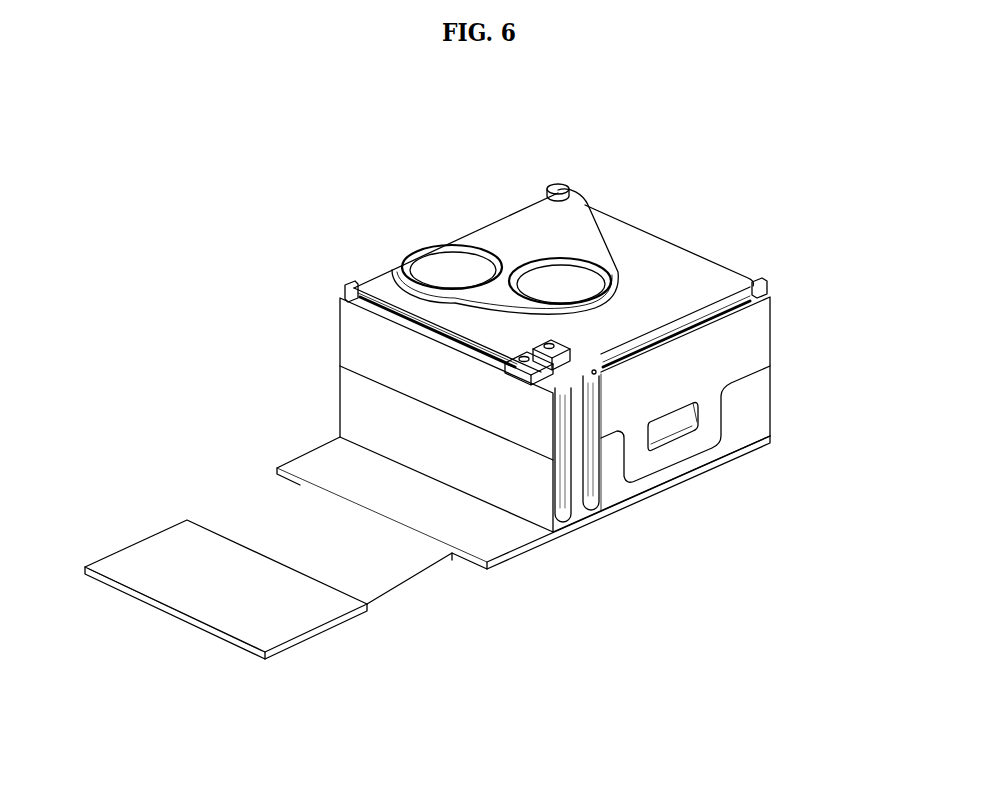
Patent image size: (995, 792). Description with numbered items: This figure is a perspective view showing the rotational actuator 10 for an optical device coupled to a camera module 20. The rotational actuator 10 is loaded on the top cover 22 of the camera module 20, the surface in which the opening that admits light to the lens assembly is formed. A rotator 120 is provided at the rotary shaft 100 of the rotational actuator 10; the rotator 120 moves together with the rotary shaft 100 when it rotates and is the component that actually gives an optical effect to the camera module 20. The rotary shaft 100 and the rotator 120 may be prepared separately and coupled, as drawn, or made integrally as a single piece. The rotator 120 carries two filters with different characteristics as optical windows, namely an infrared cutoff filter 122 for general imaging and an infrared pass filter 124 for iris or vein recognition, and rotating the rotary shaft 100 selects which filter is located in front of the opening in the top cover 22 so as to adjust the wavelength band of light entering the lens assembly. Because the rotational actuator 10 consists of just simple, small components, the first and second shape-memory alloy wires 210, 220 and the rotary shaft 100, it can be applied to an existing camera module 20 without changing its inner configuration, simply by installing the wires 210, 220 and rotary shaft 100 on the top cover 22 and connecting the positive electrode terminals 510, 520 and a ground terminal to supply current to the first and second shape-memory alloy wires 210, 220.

The rotational actuator for an optical device 10 is at (582, 183).
The camera module 20 is at (778, 398).
The top cover 22 is at (692, 266).
The rotary shaft 100 is at (557, 183).
The rotator 120 is at (500, 232).
The infrared cutoff filter 122 is at (437, 268).
The infrared pass filter 124 is at (577, 276).
The first shape-memory alloy wire 210 is at (400, 322).
The second shape-memory alloy wire 220 is at (723, 321).
The positive electrode terminal 510 is at (562, 512).
The positive electrode terminal 520 is at (590, 498).